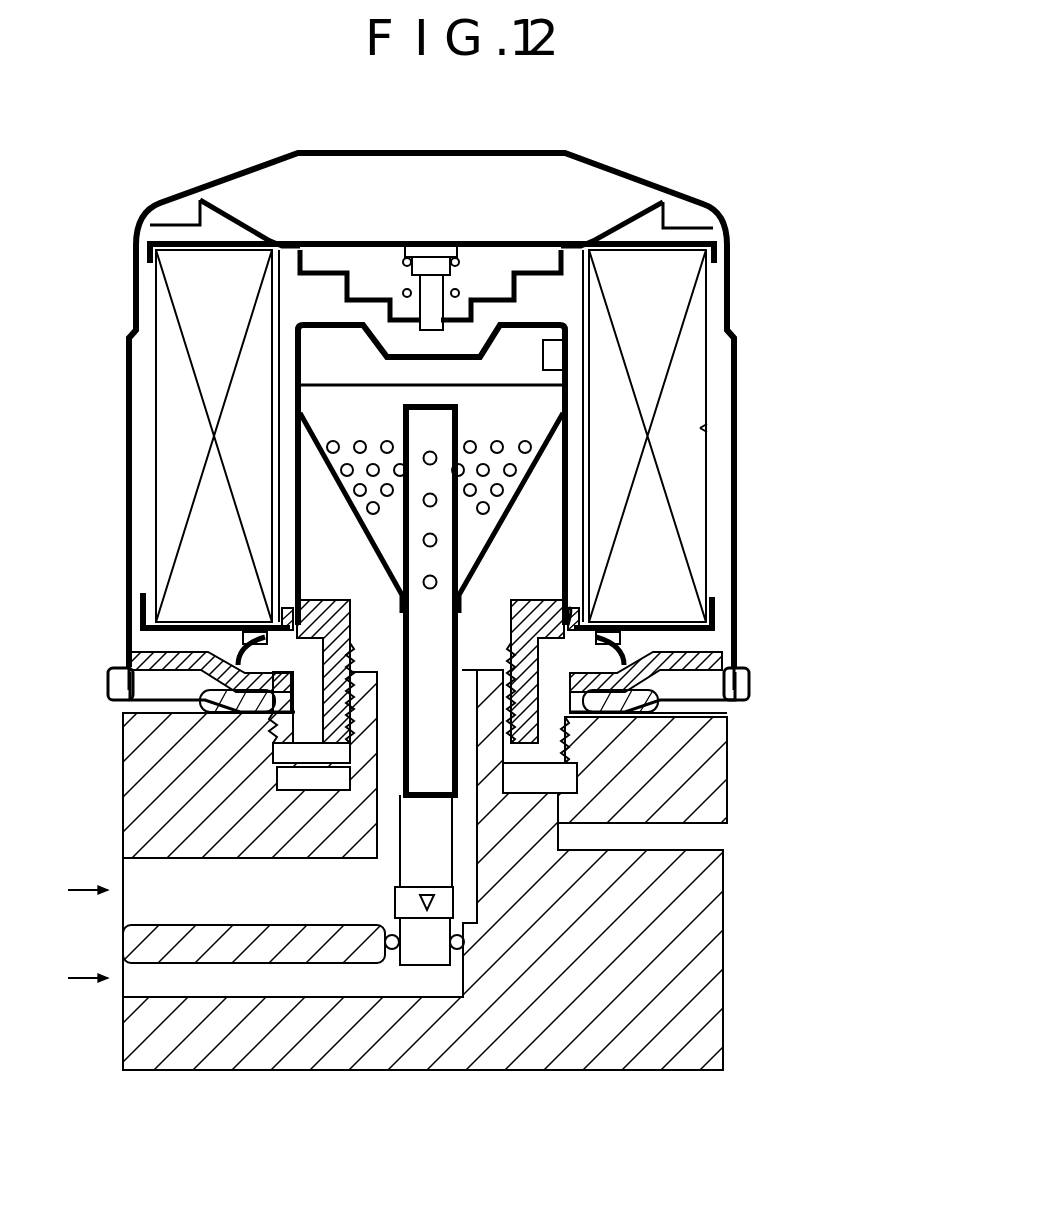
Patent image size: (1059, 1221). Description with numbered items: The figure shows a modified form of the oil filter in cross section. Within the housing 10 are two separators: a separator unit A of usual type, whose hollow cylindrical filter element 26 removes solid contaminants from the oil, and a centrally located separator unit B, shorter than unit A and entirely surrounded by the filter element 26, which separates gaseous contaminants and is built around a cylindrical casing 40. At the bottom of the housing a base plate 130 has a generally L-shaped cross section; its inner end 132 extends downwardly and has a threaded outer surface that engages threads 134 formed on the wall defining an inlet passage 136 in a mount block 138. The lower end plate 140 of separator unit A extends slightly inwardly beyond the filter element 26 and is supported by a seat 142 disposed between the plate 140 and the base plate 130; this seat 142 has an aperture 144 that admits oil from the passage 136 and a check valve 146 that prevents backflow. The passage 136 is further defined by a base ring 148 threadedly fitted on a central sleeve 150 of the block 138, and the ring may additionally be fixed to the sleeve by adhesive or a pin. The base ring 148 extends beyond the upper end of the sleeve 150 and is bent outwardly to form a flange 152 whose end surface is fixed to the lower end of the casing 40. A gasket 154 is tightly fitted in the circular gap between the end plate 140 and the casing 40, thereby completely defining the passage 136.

The housing 10 is at (636, 175).
The filter element 26 is at (683, 397).
The separator unit A is at (707, 430).
The separator unit B is at (573, 463).
The cylindrical casing 40 is at (567, 517).
The base plate 130 is at (742, 695).
The inner end 132 is at (580, 737).
The threads 134 is at (587, 740).
The inlet passage 136 is at (673, 850).
The mount block 138 is at (690, 1030).
The lower end plate 140 is at (725, 652).
The seat 142 is at (598, 645).
The aperture 144 is at (653, 672).
The check valve 146 is at (628, 655).
The base ring 148 is at (510, 745).
The central sleeve 150 is at (490, 687).
The flange 152 is at (520, 610).
The gasket 154 is at (560, 600).